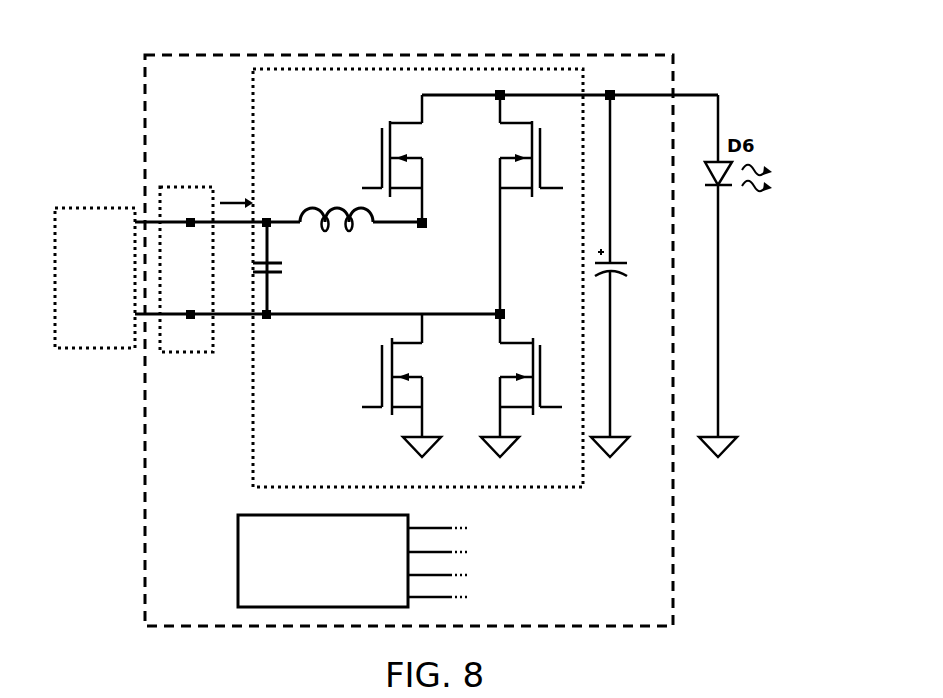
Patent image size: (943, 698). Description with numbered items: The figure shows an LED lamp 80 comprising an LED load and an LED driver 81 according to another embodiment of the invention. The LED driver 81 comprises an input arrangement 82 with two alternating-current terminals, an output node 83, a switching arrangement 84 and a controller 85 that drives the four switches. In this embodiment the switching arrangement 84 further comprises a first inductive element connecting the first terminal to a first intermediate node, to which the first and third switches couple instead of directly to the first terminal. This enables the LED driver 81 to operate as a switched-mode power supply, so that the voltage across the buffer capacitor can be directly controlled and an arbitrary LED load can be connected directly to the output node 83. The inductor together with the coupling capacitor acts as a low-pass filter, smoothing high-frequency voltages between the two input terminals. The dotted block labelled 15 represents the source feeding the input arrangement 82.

The power source / AC supply 15 is at (95, 278).
The LED lamp 80 is at (116, 566).
The LED driver 81 is at (410, 55).
The input arrangement 82 is at (188, 185).
The output node 83 is at (612, 99).
The switching arrangement 84 is at (253, 437).
The controller 85 is at (368, 561).